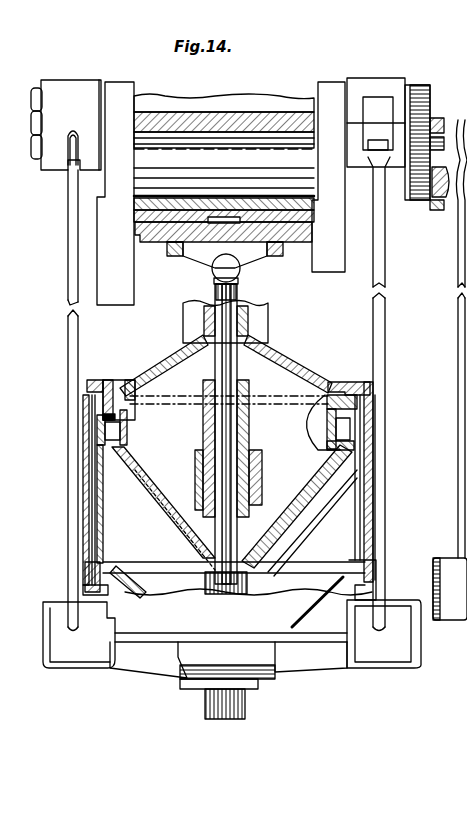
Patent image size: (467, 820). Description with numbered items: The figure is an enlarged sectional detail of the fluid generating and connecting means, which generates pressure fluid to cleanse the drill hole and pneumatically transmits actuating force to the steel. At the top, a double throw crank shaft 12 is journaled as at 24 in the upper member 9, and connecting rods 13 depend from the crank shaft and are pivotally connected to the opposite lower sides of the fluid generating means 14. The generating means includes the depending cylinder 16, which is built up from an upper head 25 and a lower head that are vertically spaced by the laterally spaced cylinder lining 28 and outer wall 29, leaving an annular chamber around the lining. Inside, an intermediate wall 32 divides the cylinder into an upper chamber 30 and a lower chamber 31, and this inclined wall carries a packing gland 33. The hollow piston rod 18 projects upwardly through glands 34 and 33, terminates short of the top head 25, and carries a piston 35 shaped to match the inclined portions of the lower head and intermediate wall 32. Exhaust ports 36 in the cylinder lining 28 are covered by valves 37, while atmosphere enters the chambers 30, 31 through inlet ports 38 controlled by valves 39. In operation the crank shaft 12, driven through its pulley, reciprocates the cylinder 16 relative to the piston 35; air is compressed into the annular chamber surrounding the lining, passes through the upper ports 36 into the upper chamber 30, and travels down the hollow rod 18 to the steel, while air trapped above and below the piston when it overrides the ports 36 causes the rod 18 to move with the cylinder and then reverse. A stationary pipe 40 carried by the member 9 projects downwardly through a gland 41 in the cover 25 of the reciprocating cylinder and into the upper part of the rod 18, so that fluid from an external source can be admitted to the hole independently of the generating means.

The upper member 9 is at (160, 100).
The journal 24 is at (250, 112).
The double throw crank shaft 12 is at (418, 85).
The connecting rods 13 is at (68, 226).
The gland 41 is at (183, 315).
The stationary pipe 40 is at (240, 290).
The fluid generating means 14 is at (290, 360).
The upper head 25 is at (288, 368).
The upper chamber 30 is at (290, 395).
The intermediate wall 32 is at (345, 382).
The cylinder 16 is at (372, 420).
The inlet ports 38 is at (112, 380).
The valves 39 is at (104, 418).
The piston 35 is at (350, 430).
The packing gland 33 is at (252, 455).
The outer wall 29 is at (368, 466).
The valves 37 is at (100, 518).
The cylinder lining 28 is at (362, 500).
The exhaust ports 36 is at (95, 538).
The lower chamber 31 is at (92, 572).
The piston rod 18 is at (205, 713).
The gland 34 is at (276, 686).